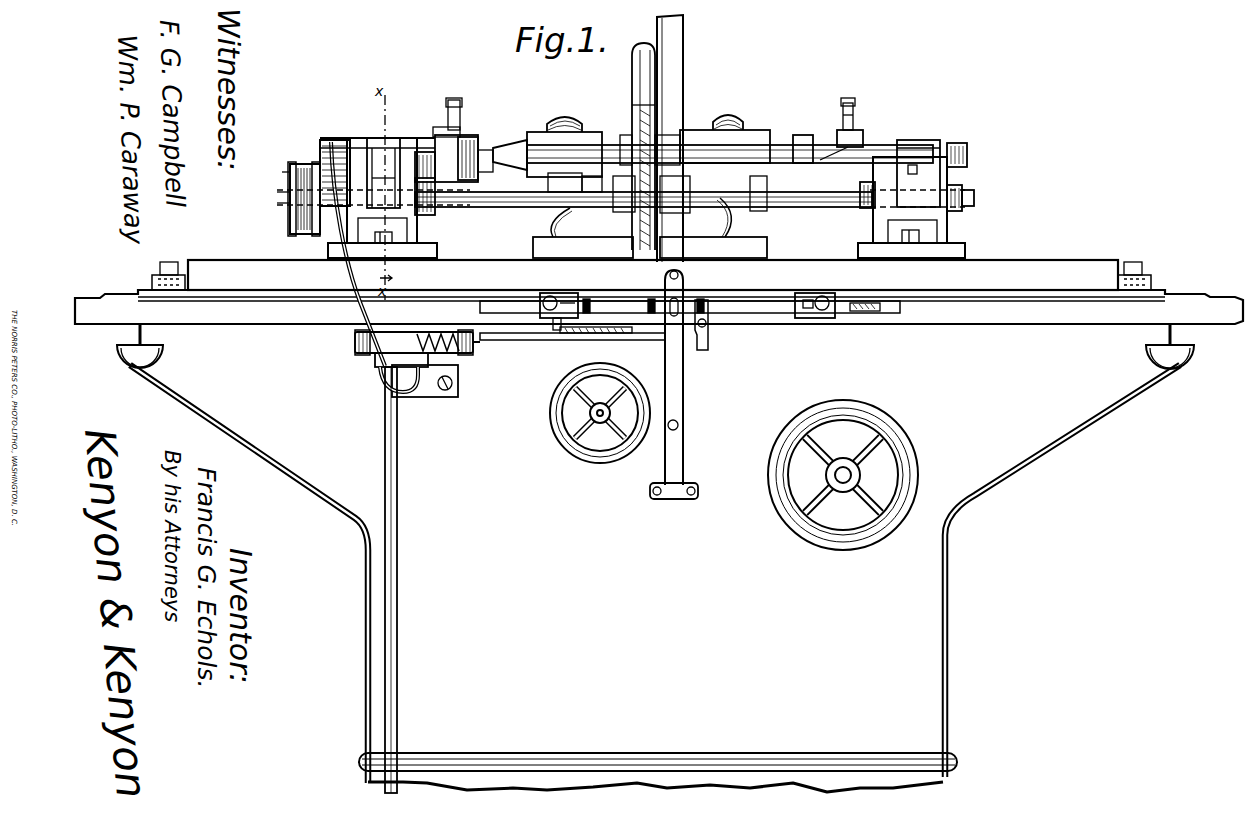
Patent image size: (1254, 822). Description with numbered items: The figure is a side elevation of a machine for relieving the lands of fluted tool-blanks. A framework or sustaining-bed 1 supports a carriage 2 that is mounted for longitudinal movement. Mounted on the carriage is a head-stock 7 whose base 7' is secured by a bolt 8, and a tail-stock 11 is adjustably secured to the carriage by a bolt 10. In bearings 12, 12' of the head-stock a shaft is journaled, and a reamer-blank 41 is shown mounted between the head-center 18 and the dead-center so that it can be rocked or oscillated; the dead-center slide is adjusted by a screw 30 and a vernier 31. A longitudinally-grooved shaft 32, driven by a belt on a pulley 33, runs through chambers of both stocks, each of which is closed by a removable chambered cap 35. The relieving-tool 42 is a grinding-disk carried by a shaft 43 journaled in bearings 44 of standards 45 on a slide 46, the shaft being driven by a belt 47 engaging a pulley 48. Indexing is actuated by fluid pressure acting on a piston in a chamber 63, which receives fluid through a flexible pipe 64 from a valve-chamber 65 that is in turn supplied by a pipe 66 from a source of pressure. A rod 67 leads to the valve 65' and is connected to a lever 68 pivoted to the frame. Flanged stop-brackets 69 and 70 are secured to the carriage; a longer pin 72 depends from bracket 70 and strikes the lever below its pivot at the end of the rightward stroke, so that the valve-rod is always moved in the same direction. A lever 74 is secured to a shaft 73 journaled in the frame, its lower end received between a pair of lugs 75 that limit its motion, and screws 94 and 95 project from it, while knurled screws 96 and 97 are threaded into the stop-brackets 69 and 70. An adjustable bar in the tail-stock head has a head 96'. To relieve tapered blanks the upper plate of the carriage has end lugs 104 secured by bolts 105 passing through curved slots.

The framework 1 is at (655, 578).
The carriage 2 is at (653, 275).
The head-stock 7 is at (377, 190).
The head-stock base 7' is at (403, 248).
The bolt 8 is at (392, 236).
The bolt 10 is at (919, 236).
The tail-stock 11 is at (935, 178).
The bearing 12 is at (372, 163).
The bearing 12' is at (411, 163).
The head-center 18 is at (508, 160).
The screw 30 is at (838, 155).
The vernier 31 is at (853, 104).
The longitudinally-grooved shaft 32 is at (281, 199).
The pulley 33 is at (288, 163).
The chambered cap 35 is at (912, 140).
The reamer-blank 41 is at (518, 145).
The relieving-tool 42 is at (657, 218).
The shaft 43 is at (632, 118).
The bearings 44 is at (570, 128).
The standards 45 is at (578, 225).
The slide 46 is at (583, 233).
The belt 47 is at (683, 40).
The pulley 48 is at (690, 138).
The chamber 63 is at (328, 140).
The flexible pipe 64 is at (352, 272).
The valve-chamber 65 is at (417, 363).
The valve 65' is at (438, 327).
The pipe 66 is at (397, 416).
The rod 67 is at (512, 340).
The lever 68 is at (710, 323).
The stop-bracket 69 is at (814, 296).
The stop-bracket 70 is at (555, 296).
The pin 72 is at (568, 335).
The shaft 73 is at (679, 425).
The lever 74 is at (684, 380).
The lugs 75 is at (674, 505).
The screw 94 is at (703, 299).
The screw 95 is at (652, 299).
The screw 96 is at (690, 230).
The head 96' is at (807, 135).
The screw 97 is at (588, 299).
The end lugs 104 is at (178, 268).
The bolts 105 is at (152, 280).